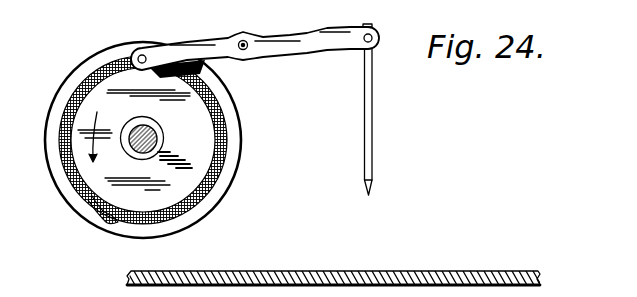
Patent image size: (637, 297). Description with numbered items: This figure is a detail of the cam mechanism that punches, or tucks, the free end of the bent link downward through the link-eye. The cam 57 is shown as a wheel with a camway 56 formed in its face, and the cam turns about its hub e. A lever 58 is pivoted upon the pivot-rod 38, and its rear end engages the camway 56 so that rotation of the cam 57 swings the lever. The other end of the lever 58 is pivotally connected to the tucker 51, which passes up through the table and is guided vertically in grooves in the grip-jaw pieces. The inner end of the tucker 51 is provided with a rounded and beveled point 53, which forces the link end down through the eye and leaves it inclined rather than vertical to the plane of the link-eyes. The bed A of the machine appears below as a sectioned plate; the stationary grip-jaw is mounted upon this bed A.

The cam 57 is at (158, 140).
The camway 56 is at (217, 127).
The hub shaft e is at (150, 131).
The lever 58 is at (316, 52).
The pivot-rod 38 is at (245, 42).
The tucker 51 is at (383, 114).
The beveled point 53 is at (382, 189).
The bed A is at (330, 261).